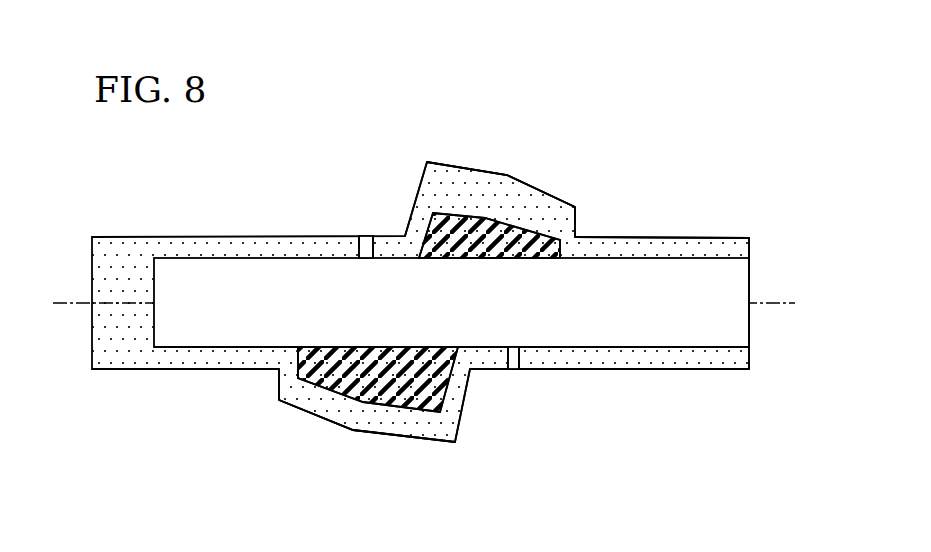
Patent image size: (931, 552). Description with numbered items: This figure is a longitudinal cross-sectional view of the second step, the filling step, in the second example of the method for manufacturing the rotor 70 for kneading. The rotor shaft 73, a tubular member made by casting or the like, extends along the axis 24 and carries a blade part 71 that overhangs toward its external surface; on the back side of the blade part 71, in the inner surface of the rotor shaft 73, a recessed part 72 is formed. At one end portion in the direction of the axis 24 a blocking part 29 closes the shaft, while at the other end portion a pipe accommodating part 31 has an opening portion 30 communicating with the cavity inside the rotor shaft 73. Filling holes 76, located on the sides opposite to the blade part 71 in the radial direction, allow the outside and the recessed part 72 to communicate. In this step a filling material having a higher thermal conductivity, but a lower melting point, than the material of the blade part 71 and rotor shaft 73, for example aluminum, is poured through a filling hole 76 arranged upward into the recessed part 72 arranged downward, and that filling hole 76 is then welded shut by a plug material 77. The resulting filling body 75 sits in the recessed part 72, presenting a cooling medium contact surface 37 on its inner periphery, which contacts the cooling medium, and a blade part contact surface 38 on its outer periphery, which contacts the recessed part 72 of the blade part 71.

The axis 24 is at (64, 298).
The blocking part 29 is at (155, 313).
The opening portion 30 is at (743, 359).
The pipe accommodating part 31 is at (713, 346).
The cooling medium contact surface 37 is at (543, 258).
The blade part contact surface 38 is at (449, 212).
The rotor for kneading 70 is at (689, 228).
The blade part 71 is at (550, 195).
The recessed part 72 is at (498, 227).
The rotor shaft 73 is at (728, 238).
The filling body 75 is at (512, 228).
The filling hole 76 is at (355, 248).
The plug material 77 is at (367, 234).